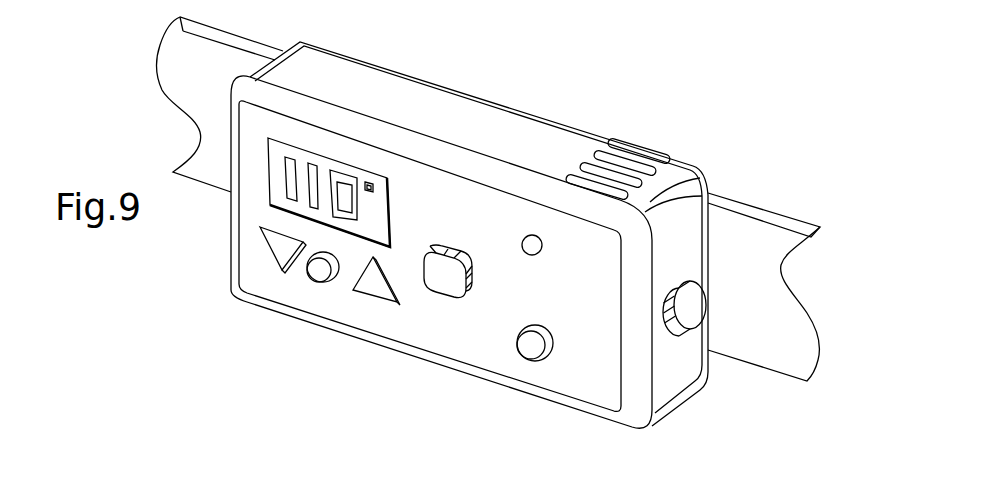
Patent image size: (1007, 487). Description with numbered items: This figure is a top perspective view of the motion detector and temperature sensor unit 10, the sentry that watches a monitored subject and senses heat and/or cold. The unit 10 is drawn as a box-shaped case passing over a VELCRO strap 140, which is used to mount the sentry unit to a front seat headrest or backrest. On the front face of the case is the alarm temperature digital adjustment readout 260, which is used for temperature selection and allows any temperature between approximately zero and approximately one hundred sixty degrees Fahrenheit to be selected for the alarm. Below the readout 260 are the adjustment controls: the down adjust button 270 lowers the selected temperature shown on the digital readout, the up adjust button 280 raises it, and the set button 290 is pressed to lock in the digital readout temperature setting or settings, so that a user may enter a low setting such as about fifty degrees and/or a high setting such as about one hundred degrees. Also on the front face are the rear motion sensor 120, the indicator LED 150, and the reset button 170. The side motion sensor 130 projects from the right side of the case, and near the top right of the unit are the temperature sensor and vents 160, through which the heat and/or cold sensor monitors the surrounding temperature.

The motion detector and temperature sensor unit 10 is at (640, 98).
The rear motion sensor 120 is at (443, 290).
The side motion sensor 130 is at (690, 320).
The VELCRO strap 140 is at (750, 233).
The indicator LED 150 is at (532, 243).
The temperature sensor and vents 160 is at (630, 173).
The reset button 170 is at (533, 353).
The alarm temperature digital adjustment readout 260 is at (338, 170).
The down adjust button 270 is at (282, 247).
The up adjust button 280 is at (373, 290).
The set button 290 is at (318, 277).